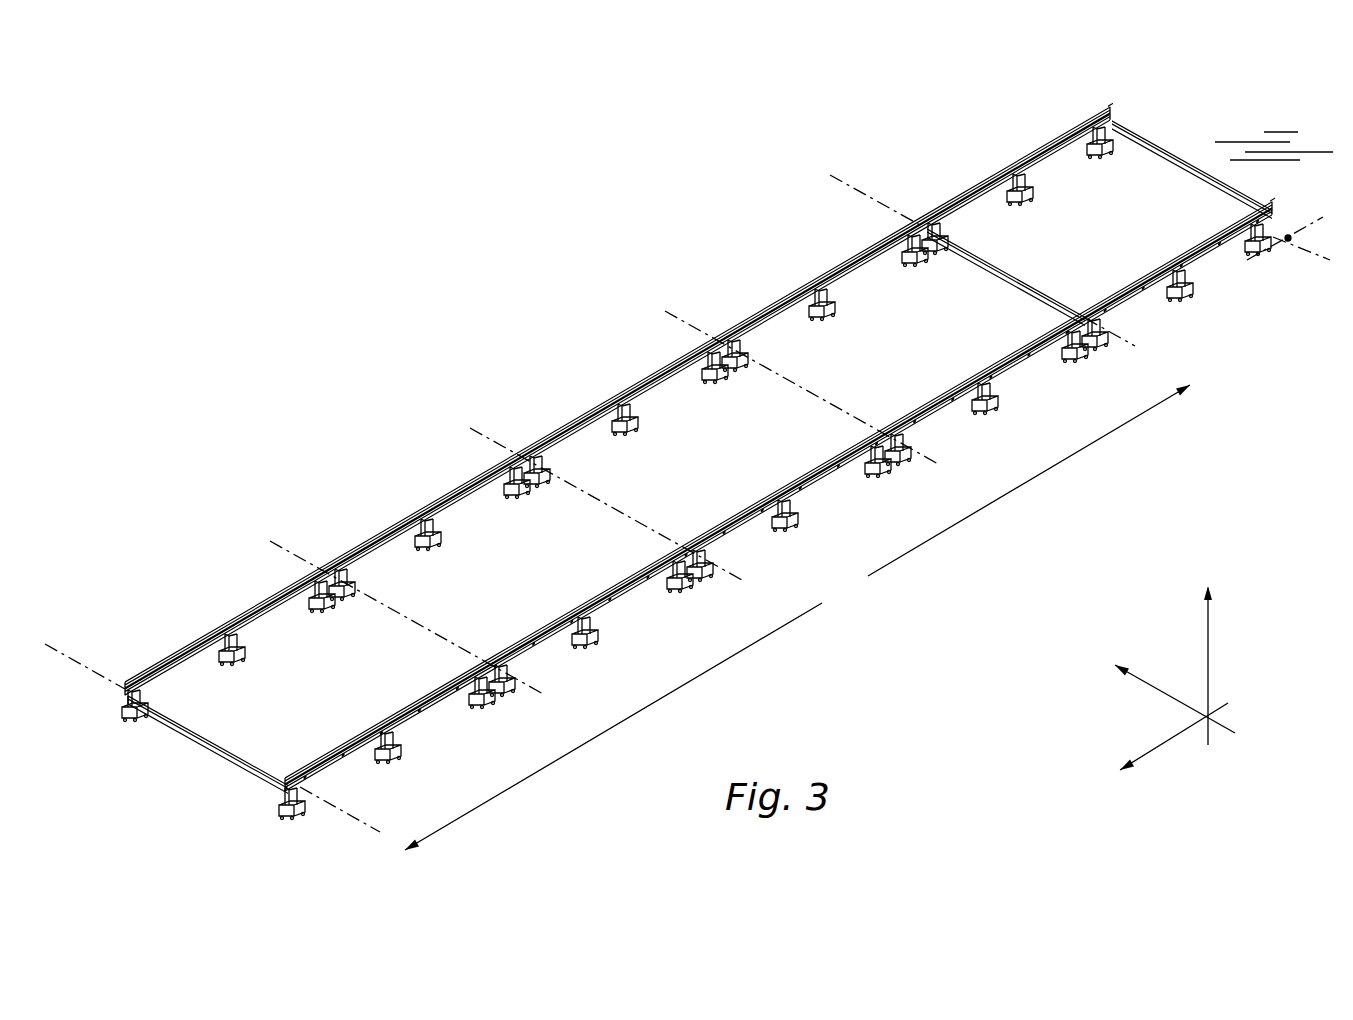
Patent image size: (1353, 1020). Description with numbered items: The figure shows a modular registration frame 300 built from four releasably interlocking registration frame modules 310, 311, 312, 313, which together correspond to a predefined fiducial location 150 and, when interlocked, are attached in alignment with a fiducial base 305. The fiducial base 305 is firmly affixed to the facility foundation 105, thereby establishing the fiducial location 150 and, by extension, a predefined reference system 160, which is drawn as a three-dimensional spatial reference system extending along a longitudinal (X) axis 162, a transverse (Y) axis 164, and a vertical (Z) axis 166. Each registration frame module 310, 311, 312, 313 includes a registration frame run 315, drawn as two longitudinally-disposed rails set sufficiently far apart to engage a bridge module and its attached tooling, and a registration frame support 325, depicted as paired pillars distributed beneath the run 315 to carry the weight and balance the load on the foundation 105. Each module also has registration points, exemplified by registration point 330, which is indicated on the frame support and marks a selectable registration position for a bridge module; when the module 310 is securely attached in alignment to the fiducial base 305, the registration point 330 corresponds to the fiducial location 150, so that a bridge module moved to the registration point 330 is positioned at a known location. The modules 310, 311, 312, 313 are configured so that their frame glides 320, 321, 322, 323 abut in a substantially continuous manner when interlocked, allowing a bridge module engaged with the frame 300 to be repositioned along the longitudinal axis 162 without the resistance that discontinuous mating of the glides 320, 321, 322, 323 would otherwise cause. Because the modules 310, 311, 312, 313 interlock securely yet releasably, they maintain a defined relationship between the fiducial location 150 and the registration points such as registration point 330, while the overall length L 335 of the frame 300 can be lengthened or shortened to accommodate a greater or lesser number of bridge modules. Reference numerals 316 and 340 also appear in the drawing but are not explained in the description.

The facility foundation 105 is at (1278, 142).
The predefined fiducial location 150 is at (1288, 242).
The predefined reference system 160 is at (1245, 788).
The longitudinal (X) axis 162 is at (1155, 752).
The transverse (Y) axis 164 is at (1153, 688).
The vertical (Z) axis 166 is at (1208, 638).
The modular registration frame 300 is at (430, 270).
The fiducial base 305 is at (1007, 167).
The registration frame module 310 is at (1052, 356).
The registration frame module 311 is at (785, 493).
The registration frame module 312 is at (586, 609).
The registration frame module 313 is at (386, 725).
The registration frame run 315 is at (874, 258).
The second rail segment 316 is at (983, 373).
The frame glide 320 is at (821, 282).
The frame glide 321 is at (623, 398).
The frame glide 322 is at (427, 512).
The frame glide 323 is at (227, 628).
The registration frame support 325 is at (1003, 392).
The registration point 330 is at (983, 381).
The overall length L 335 is at (948, 527).
The end rail segment 340 is at (1178, 262).